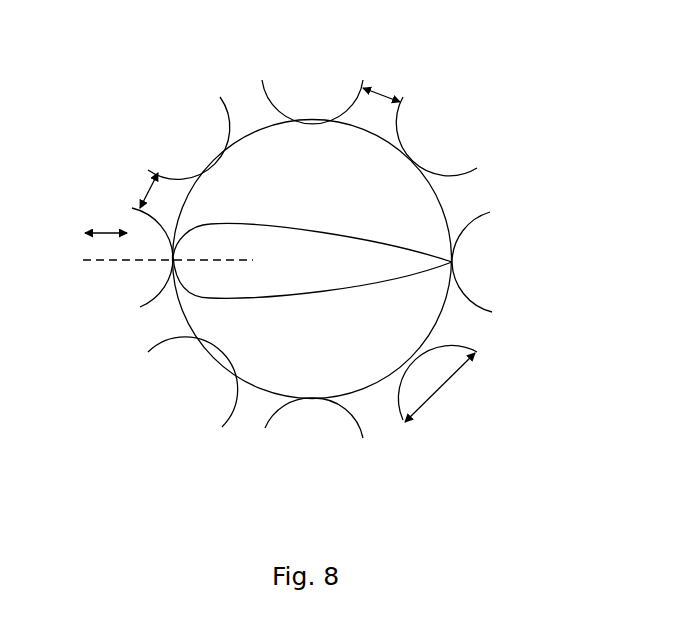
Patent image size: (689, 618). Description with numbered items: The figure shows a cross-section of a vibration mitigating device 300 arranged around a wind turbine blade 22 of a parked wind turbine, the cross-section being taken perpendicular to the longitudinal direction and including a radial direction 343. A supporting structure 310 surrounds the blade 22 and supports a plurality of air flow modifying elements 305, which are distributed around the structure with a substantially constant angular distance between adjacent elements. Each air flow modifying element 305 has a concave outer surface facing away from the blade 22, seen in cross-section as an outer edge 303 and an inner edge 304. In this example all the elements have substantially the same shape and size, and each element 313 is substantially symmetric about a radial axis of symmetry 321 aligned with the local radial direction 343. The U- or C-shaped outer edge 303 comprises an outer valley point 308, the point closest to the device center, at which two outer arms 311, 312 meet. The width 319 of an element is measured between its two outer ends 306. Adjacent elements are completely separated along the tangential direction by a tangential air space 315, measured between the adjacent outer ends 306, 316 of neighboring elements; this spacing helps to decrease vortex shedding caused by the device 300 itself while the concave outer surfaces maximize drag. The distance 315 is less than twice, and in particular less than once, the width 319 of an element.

The vibration mitigating device 300 is at (467, 82).
The inner edge 304 is at (262, 85).
The air flow modifying element 305 is at (352, 86).
The tangential air space 315 is at (383, 90).
The outer end 306 is at (465, 167).
The supporting structure 310 is at (446, 208).
The outer end 316 is at (490, 213).
The outer edge 303 is at (477, 300).
The air flow modifying element 313 is at (143, 307).
The radial axis of symmetry 321 is at (237, 256).
The wind turbine blade 22 is at (425, 273).
The width 319 is at (448, 382).
The outer valley point 308 is at (302, 419).
The outer arm 311 is at (266, 430).
The outer arm 312 is at (350, 433).
The radial direction 343 is at (103, 228).